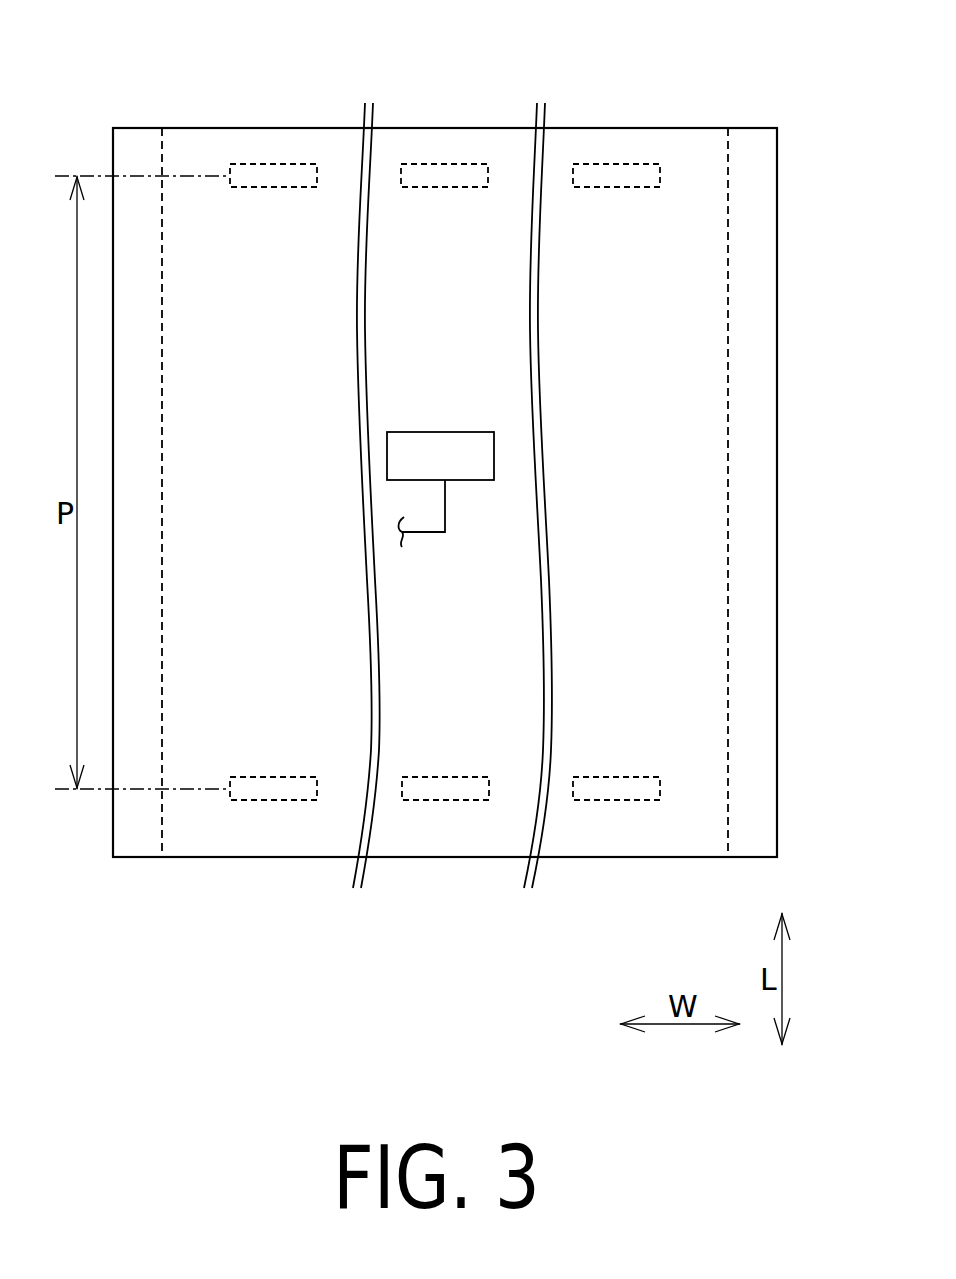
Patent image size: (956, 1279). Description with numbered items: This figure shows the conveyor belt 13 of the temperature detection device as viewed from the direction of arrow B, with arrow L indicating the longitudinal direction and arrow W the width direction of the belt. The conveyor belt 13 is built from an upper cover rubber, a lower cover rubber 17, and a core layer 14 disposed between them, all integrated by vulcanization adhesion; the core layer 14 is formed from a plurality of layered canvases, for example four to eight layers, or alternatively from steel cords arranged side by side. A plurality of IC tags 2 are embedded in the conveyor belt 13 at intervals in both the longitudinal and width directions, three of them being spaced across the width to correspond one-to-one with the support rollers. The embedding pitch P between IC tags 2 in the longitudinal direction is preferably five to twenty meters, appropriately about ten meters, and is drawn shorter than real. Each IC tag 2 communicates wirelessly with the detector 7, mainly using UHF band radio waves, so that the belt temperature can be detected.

The IC tag 2 is at (273, 178).
The detector 7 is at (434, 442).
The conveyor belt 13 is at (498, 131).
The core layer 14 is at (726, 201).
The lower cover rubber 17 is at (335, 145).